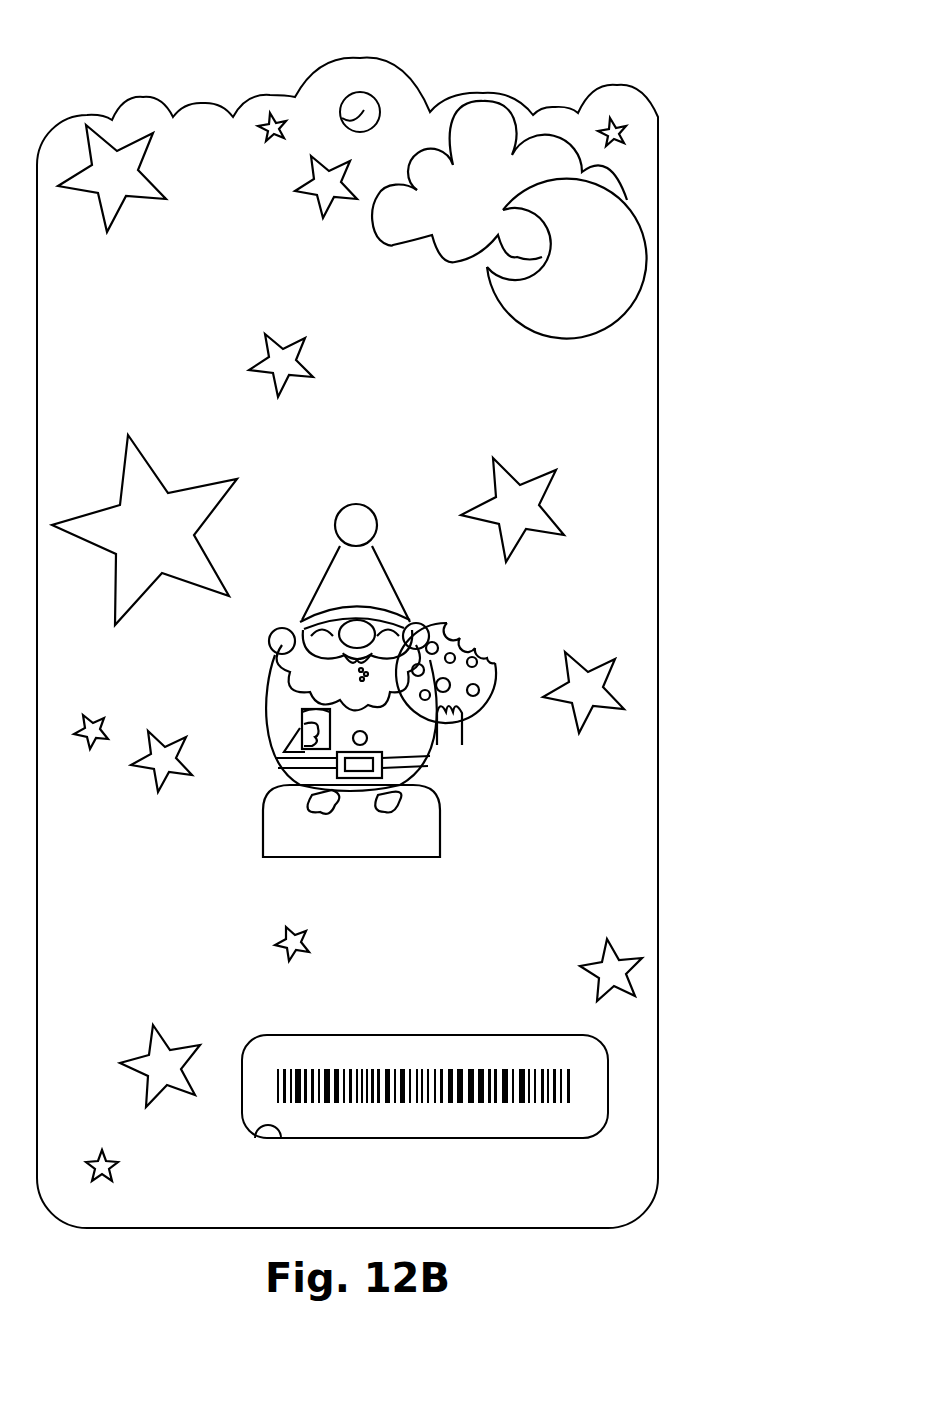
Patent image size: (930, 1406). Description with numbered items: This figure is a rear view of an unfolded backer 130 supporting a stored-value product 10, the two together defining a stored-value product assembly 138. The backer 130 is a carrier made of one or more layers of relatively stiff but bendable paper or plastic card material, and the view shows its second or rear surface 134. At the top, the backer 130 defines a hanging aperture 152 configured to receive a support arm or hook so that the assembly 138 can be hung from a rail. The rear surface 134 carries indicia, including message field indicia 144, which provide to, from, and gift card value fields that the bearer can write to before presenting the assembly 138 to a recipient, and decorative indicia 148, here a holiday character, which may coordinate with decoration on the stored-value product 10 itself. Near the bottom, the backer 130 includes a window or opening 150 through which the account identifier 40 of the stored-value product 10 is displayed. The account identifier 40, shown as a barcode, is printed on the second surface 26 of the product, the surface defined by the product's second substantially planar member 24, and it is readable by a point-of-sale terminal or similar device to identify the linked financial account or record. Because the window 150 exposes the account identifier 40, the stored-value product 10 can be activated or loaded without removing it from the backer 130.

The stored-value product 10 is at (582, 1114).
The second substantially planar member 24 is at (488, 1113).
The second surface 26 is at (582, 1058).
The account identifier 40 is at (580, 1082).
The backer 130 is at (663, 110).
The rear surface 134 is at (602, 405).
The stored-value product assembly 138 is at (690, 52).
The message field indicia 144 is at (597, 240).
The decorative indicia 148 is at (487, 638).
The window 150 is at (273, 1142).
The hanging aperture 152 is at (360, 108).